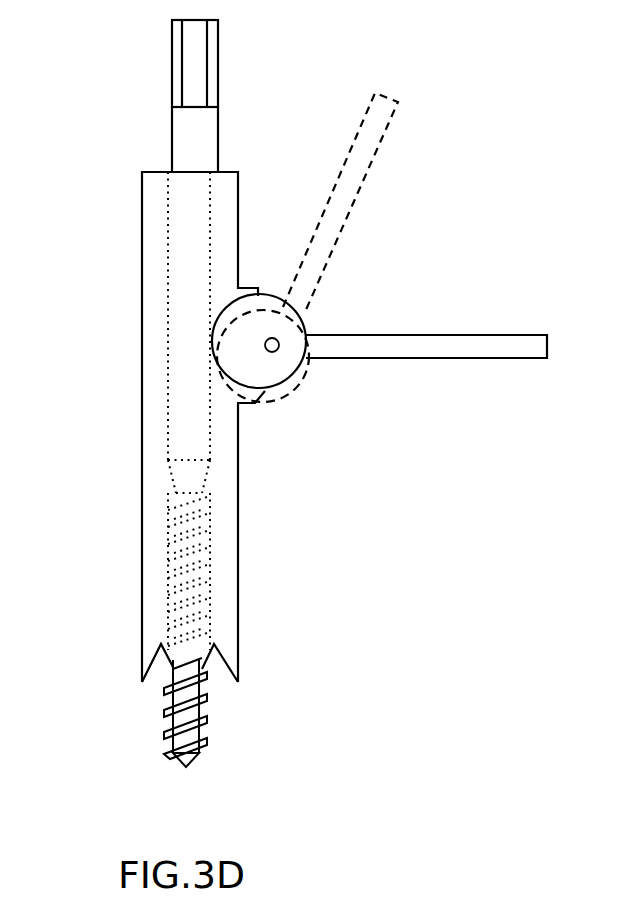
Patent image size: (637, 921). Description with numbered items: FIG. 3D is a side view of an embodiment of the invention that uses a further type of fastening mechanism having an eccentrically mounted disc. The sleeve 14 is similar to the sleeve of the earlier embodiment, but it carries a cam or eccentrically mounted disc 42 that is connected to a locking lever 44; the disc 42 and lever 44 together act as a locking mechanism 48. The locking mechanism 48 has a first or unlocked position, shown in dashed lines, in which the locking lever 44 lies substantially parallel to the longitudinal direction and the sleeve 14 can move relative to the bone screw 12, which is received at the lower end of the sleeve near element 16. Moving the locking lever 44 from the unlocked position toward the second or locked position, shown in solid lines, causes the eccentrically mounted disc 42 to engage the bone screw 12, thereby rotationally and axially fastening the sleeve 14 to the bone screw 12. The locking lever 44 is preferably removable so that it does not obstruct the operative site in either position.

The bone screw 12 is at (167, 761).
The sleeve 14 is at (141, 607).
The prongs at tip of sleeve 16 is at (157, 679).
The eccentrically mounted disc 42 is at (233, 353).
The locking lever 44 is at (322, 268).
The locking mechanism 48 is at (377, 292).